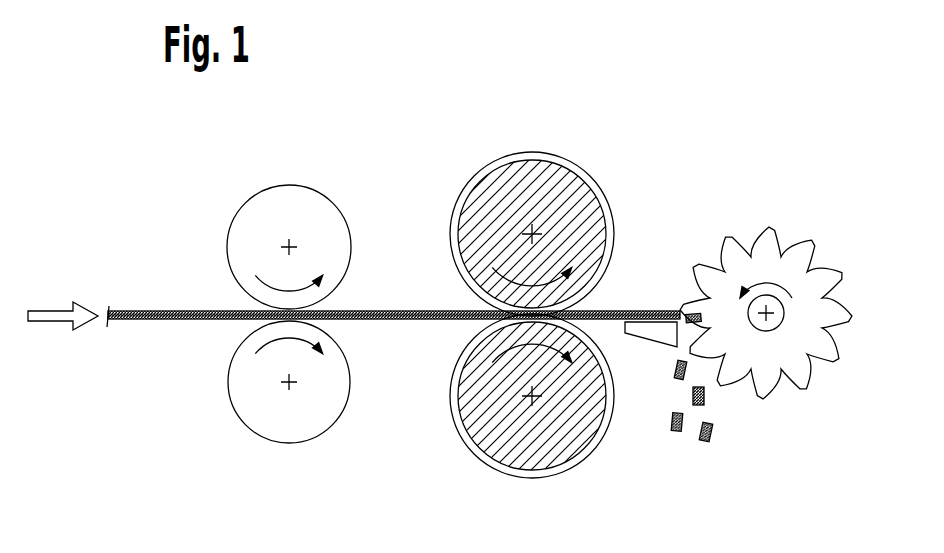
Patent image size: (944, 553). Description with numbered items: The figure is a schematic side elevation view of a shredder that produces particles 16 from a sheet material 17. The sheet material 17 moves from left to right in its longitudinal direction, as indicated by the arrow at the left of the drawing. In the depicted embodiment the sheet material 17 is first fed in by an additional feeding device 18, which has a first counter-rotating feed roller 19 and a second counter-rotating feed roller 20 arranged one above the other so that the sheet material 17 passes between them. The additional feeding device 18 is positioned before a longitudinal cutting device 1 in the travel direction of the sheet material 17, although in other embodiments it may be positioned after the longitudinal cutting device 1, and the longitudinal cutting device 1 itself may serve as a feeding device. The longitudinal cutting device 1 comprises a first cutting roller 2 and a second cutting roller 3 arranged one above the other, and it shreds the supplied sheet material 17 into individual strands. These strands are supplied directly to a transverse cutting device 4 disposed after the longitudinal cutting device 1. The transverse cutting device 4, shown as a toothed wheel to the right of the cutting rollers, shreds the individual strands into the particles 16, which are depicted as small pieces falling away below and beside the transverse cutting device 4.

The longitudinal cutting device 1 is at (555, 288).
The first cutting roller 2 is at (466, 172).
The second cutting roller 3 is at (481, 464).
The transverse cutting device 4 is at (791, 237).
The particles 16 is at (705, 394).
The sheet material 17 is at (171, 322).
The additional feeding device 18 is at (270, 272).
The first counter-rotating feed roller 19 is at (231, 212).
The second counter-rotating feed roller 20 is at (229, 400).